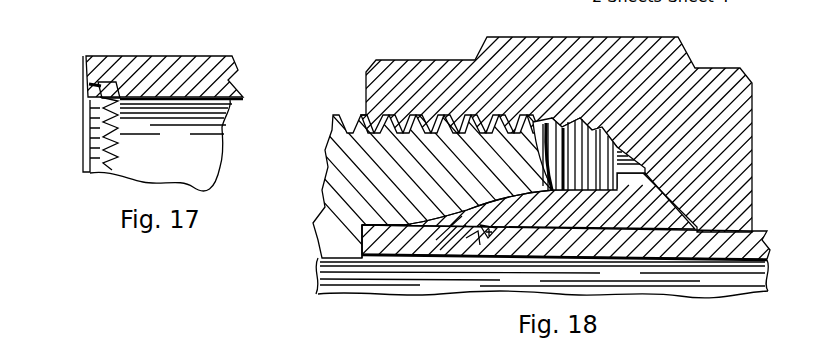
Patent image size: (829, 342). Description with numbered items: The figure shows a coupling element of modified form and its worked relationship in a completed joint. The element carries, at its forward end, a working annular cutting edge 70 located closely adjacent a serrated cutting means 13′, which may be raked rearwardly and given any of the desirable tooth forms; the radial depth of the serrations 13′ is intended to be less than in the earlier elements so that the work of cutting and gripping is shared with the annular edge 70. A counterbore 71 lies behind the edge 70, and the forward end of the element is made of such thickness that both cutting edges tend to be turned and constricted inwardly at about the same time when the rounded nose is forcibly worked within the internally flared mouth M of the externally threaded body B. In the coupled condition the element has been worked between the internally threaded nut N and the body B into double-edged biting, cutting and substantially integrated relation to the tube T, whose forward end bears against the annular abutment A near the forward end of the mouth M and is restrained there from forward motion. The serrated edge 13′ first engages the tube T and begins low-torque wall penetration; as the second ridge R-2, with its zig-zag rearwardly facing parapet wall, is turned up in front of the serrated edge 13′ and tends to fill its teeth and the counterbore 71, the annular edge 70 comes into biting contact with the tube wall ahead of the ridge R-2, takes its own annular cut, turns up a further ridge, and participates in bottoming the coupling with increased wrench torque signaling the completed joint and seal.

In FIG. 17, the counterbore 71 is at (95, 86).
In FIG. 17, the annular cutting edge 70 is at (100, 130).
In FIG. 18, the annular cutting edge 70 is at (463, 215).
In FIG. 17, the serrated cutting means 13′ is at (105, 140).
In FIG. 18, the serrated cutting means 13′ is at (488, 240).
In FIG. 18, the internally flared mouth M is at (543, 133).
In FIG. 18, the nut N is at (712, 75).
In FIG. 18, the body B is at (330, 155).
In FIG. 18, the annular abutment A is at (362, 238).
In FIG. 18, the second ridge R-2 is at (470, 243).
In FIG. 18, the tube T is at (655, 280).